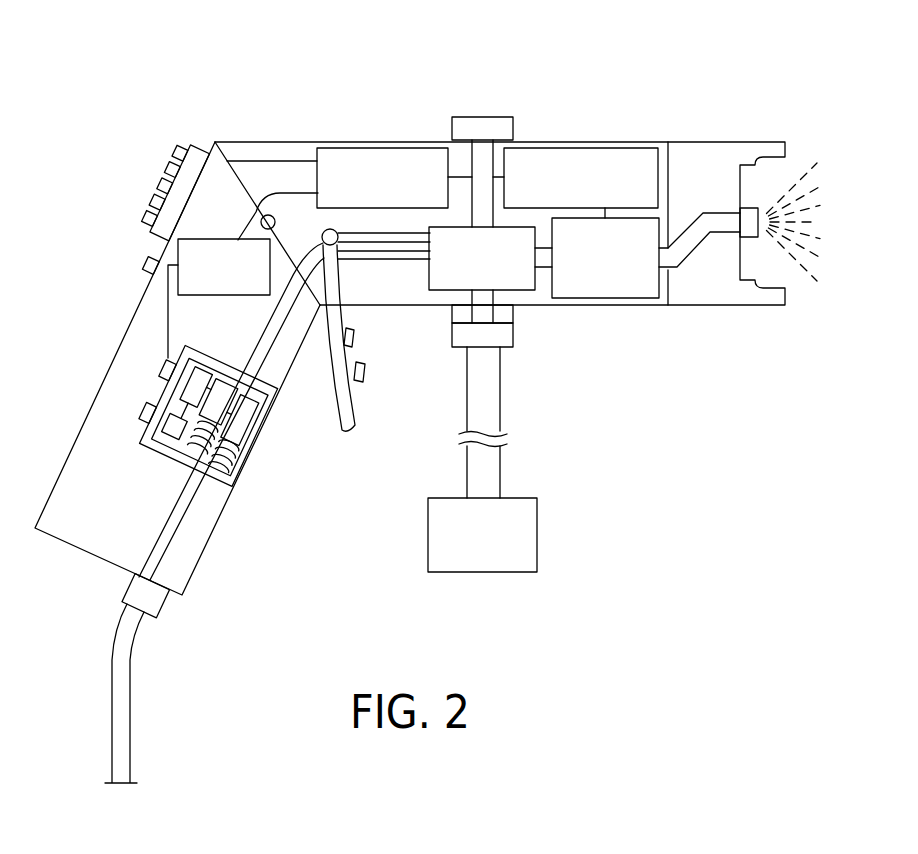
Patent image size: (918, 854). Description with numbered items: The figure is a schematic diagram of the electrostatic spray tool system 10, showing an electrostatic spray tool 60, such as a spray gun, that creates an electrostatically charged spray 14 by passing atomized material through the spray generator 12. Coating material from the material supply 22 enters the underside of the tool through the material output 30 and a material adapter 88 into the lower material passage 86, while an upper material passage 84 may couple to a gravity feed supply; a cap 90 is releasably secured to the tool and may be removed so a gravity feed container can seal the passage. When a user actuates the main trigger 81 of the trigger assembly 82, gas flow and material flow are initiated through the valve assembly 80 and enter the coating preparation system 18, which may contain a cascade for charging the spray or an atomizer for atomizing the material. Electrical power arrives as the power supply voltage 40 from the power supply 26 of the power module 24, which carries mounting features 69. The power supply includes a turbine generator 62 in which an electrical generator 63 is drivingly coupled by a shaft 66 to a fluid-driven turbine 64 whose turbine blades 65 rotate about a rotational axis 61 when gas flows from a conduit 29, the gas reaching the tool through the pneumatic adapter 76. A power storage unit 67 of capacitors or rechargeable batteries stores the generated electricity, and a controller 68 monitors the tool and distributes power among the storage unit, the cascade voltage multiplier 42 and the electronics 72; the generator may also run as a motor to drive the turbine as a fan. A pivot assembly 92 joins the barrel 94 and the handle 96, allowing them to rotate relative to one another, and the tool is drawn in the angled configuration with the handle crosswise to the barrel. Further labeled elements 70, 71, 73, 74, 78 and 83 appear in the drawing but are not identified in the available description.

The electrostatic spray tool system 10 is at (86, 74).
The spray generator 12 is at (638, 40).
The electrostatically charged spray 14 is at (817, 162).
The coating preparation system 18 is at (628, 298).
The material supply 22 is at (537, 534).
The power module 24 is at (242, 488).
The power supply 26 is at (225, 493).
The conduit 29 is at (132, 747).
The material output 30 is at (500, 470).
The power supply voltage 40 is at (162, 318).
The cascade voltage multiplier 42 is at (626, 150).
The electrostatic spray tool 60 is at (351, 480).
The rotational axis 61 is at (232, 368).
The turbine generator 62 is at (247, 456).
The electrical generator 63 is at (253, 424).
The fluid-driven turbine 64 is at (262, 475).
The turbine blades 65 is at (200, 463).
The shaft 66 is at (195, 478).
The power storage unit 67 is at (200, 372).
The controller 68 is at (150, 417).
The mounting features 69 is at (148, 405).
The conductor 70 is at (209, 492).
The inner housing 71 is at (262, 420).
The electronics 72 is at (382, 149).
The grounding bar 73 is at (200, 136).
The contacts 74 is at (152, 186).
The pneumatic adapter 76 is at (163, 603).
The conduits 78 is at (378, 262).
The valve assembly 80 is at (523, 290).
The main trigger 81 is at (357, 432).
The trigger assembly 82 is at (362, 430).
The trigger contacts 83 is at (353, 326).
The upper material passage 84 is at (473, 217).
The lower material passage 86 is at (455, 307).
The material adapter 88 is at (513, 337).
The cap 90 is at (481, 117).
The pivot assembly 92 is at (282, 212).
The barrel 94 is at (557, 142).
The handle 96 is at (90, 406).